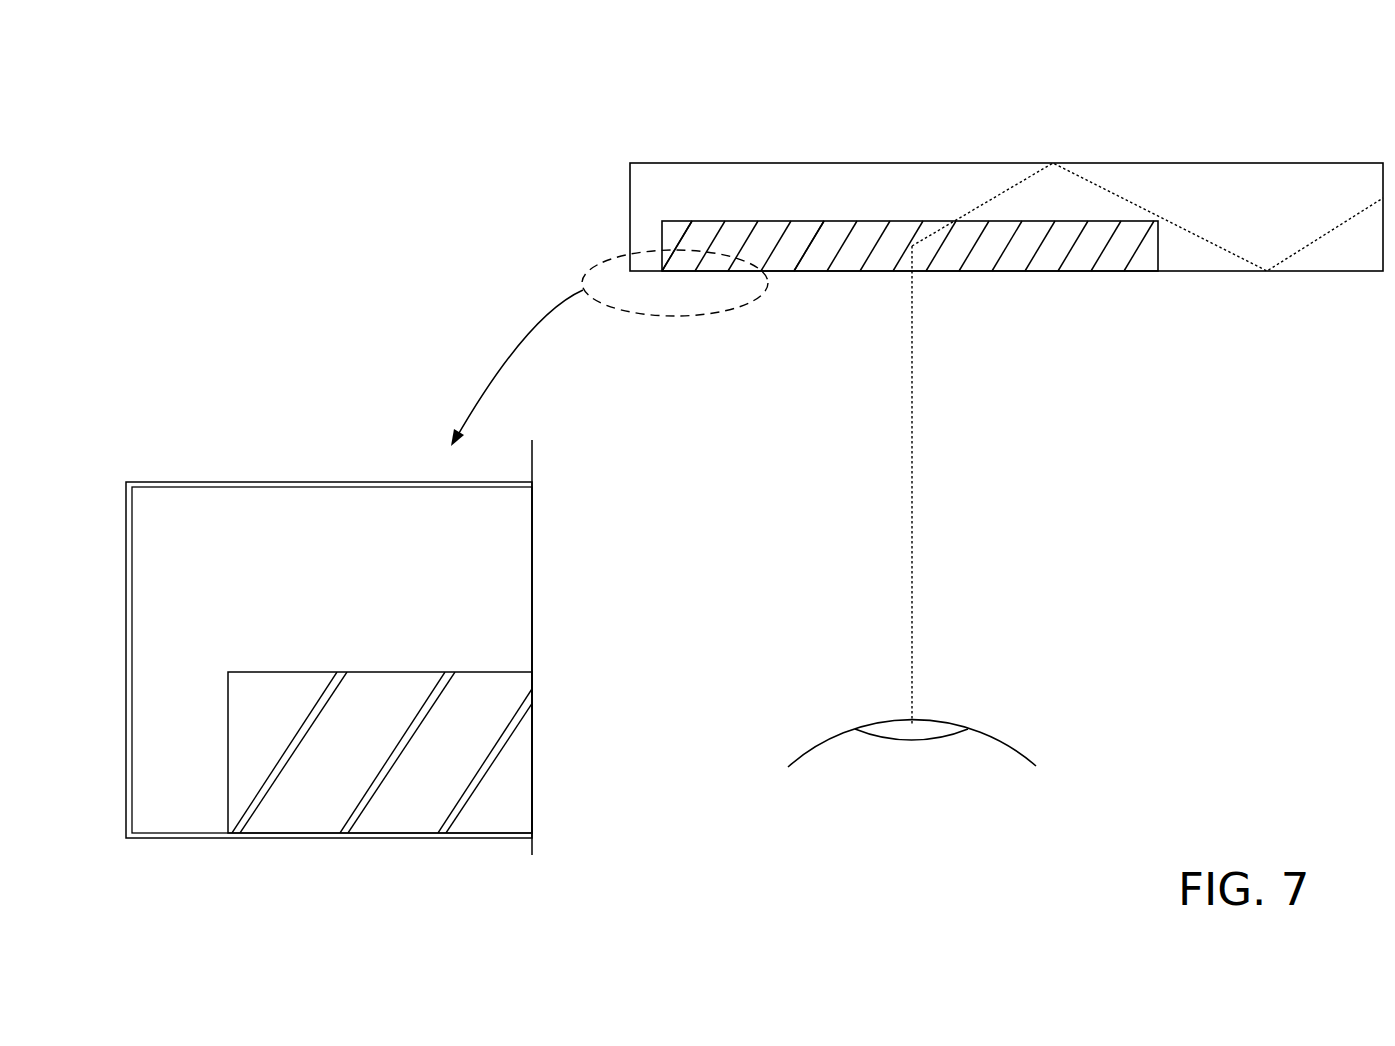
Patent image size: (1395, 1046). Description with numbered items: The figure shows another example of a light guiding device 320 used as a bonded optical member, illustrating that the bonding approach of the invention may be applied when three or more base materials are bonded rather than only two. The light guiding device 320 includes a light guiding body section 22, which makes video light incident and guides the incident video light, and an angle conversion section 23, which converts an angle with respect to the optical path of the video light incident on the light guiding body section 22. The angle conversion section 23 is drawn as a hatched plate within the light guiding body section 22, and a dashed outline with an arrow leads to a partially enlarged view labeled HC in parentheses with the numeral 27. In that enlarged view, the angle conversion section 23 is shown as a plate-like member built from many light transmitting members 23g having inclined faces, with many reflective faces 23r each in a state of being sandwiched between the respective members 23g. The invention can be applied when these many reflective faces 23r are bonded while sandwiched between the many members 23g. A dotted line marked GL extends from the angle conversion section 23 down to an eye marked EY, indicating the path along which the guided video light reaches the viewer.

The light guiding device 320 is at (856, 98).
The light guiding body section 22 is at (1180, 183).
The angle conversion section 23 is at (1003, 272).
The reflective faces 23r is at (744, 245).
The light transmitting members 23g is at (878, 268).
The hologram element (HC) 27 is at (339, 618).
The hologram element HC is at (377, 482).
The gaze line GL is at (910, 552).
The eye EY is at (874, 728).